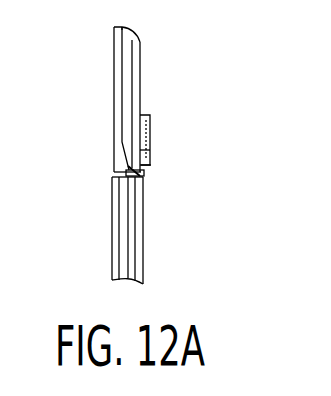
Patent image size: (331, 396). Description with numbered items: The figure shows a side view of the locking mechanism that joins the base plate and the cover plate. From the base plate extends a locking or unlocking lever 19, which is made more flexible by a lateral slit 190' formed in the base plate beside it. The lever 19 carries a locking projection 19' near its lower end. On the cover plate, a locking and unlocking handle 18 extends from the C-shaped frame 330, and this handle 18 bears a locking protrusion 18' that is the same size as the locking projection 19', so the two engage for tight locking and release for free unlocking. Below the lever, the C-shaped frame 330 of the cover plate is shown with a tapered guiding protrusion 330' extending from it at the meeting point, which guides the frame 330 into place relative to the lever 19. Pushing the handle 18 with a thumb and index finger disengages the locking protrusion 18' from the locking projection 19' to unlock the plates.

The locking or unlocking lever 19 is at (77, 99).
The lateral slit 190' is at (90, 54).
The locking and unlocking handle 18 is at (175, 136).
The locking protrusion 18' is at (176, 159).
The locking projection 19' is at (95, 169).
The tapered guiding protrusion 330' is at (177, 196).
The C-shaped frame 330 is at (182, 232).